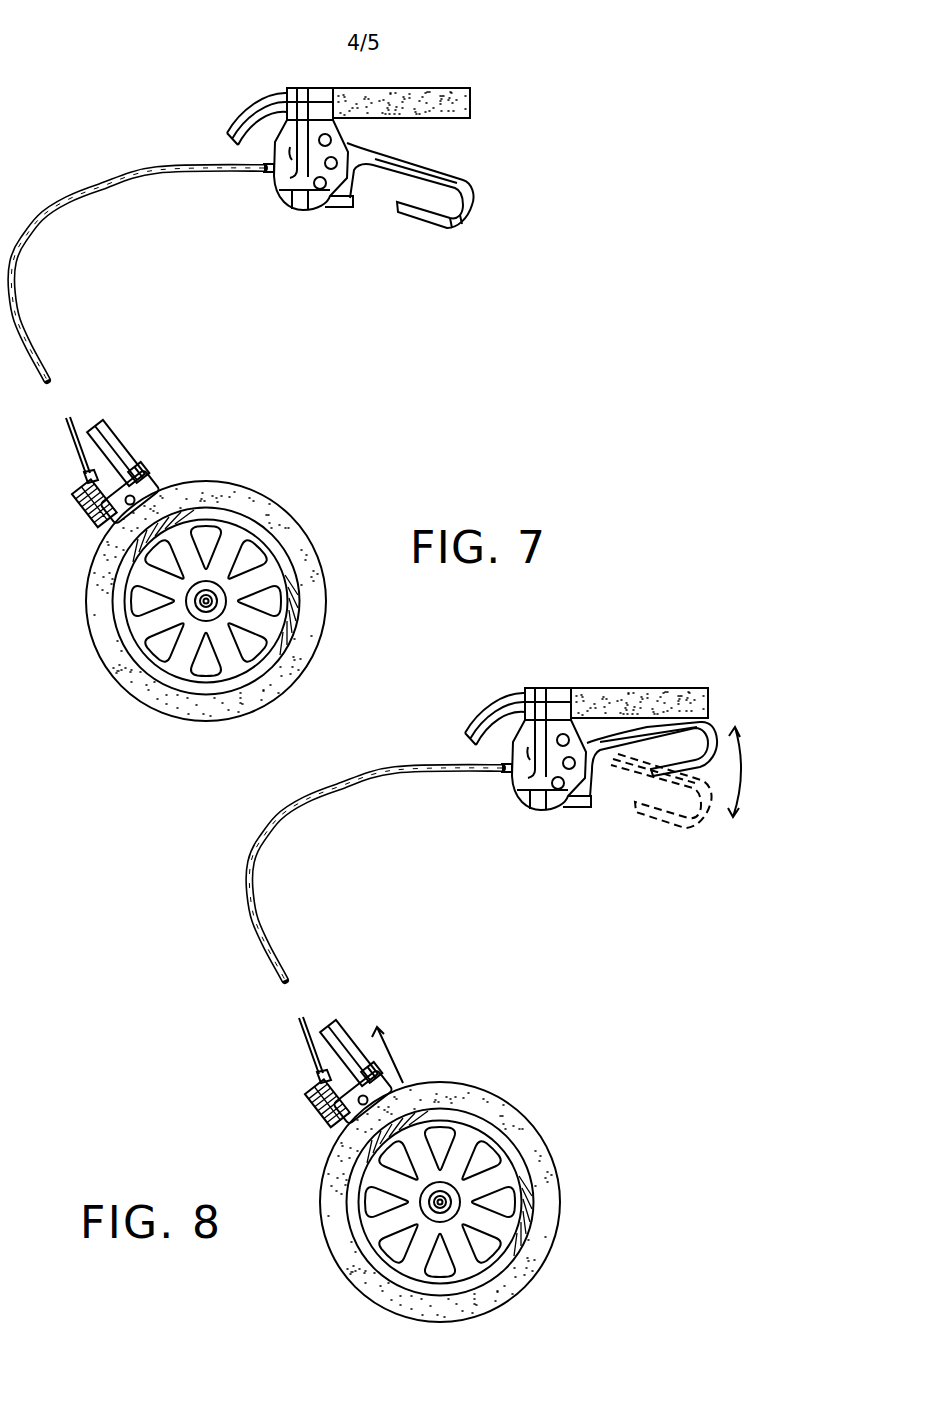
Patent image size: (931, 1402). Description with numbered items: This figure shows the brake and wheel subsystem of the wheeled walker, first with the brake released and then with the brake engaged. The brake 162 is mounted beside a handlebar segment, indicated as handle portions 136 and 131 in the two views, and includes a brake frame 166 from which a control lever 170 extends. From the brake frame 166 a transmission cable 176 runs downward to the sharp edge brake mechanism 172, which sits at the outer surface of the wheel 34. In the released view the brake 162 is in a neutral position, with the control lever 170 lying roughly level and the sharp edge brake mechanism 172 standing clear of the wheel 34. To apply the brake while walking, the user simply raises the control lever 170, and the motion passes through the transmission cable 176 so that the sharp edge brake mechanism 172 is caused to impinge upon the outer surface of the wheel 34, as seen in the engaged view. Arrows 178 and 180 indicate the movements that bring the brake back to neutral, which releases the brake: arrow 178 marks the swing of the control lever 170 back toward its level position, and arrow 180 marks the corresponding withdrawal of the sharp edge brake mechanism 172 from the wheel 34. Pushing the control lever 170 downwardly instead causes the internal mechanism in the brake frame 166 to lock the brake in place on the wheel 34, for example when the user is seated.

In FIG. 7, the wheel 34 is at (293, 547).
In FIG. 8, the wheel 34 is at (510, 1123).
In FIG. 8, the handlebar 131 is at (640, 700).
In FIG. 7, the handlebar 136 is at (413, 103).
In FIG. 7, the brake 162 is at (296, 230).
In FIG. 8, the brake 162 is at (540, 829).
In FIG. 7, the brake frame 166 is at (310, 86).
In FIG. 8, the brake frame 166 is at (533, 747).
In FIG. 7, the control lever 170 is at (433, 177).
In FIG. 8, the control lever 170 is at (710, 723).
In FIG. 7, the sharp edge brake mechanism 172 is at (150, 480).
In FIG. 8, the sharp edge brake mechanism 172 is at (400, 1080).
In FIG. 7, the transmission cable 176 is at (157, 170).
In FIG. 8, the transmission cable 176 is at (367, 777).
In FIG. 8, the arrow 178 is at (743, 773).
In FIG. 8, the arrow 180 is at (390, 1052).